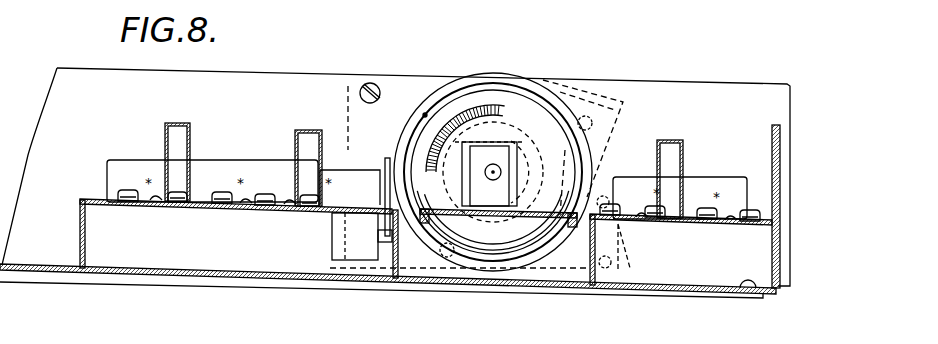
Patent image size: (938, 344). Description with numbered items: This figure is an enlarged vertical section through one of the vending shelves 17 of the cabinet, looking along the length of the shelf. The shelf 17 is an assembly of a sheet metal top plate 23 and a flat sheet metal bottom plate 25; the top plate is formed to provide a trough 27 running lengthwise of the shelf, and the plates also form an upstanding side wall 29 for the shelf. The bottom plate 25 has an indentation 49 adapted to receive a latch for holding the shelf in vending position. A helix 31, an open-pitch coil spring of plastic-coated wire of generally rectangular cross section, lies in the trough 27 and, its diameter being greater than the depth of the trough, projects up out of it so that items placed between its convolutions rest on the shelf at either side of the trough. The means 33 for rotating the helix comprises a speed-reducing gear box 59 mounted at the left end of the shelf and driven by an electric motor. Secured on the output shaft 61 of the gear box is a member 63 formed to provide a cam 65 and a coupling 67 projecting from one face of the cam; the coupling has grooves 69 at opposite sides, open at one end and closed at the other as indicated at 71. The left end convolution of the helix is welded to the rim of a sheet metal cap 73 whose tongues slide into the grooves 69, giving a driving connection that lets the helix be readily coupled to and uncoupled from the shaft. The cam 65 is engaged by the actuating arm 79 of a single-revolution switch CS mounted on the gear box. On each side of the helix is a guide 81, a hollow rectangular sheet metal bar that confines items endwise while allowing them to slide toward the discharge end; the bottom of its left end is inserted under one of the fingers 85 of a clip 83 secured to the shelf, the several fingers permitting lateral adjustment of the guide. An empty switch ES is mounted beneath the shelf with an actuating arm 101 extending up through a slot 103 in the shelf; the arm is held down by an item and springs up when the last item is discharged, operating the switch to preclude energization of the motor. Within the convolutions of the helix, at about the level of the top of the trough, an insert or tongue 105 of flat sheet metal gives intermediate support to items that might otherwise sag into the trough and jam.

The shelf 17 is at (180, 293).
The top plate 23 is at (200, 207).
The bottom plate 25 is at (247, 283).
The trough 27 is at (86, 247).
The side wall 29 is at (772, 133).
The helix 31 is at (491, 73).
The means for rotating each helix 33 is at (346, 114).
The indentation 49 is at (751, 286).
The speed-reducing gear box 59 is at (347, 85).
The output shaft 61 is at (486, 174).
The member 63 is at (448, 144).
The cam 65 is at (492, 140).
The coupling 67 is at (514, 150).
The grooves 69 is at (528, 163).
The closed end of groove 71 is at (512, 219).
The sheet metal cap 73 is at (461, 110).
The actuating arm 79 is at (597, 170).
The guide 81 is at (180, 123).
The clip 83 is at (243, 176).
The fingers 85 is at (122, 190).
The actuating arm 101 is at (386, 158).
The slot 103 is at (356, 236).
The insert or tongue 105 is at (488, 218).
The empty switch ES is at (330, 236).
The switch CS is at (628, 242).